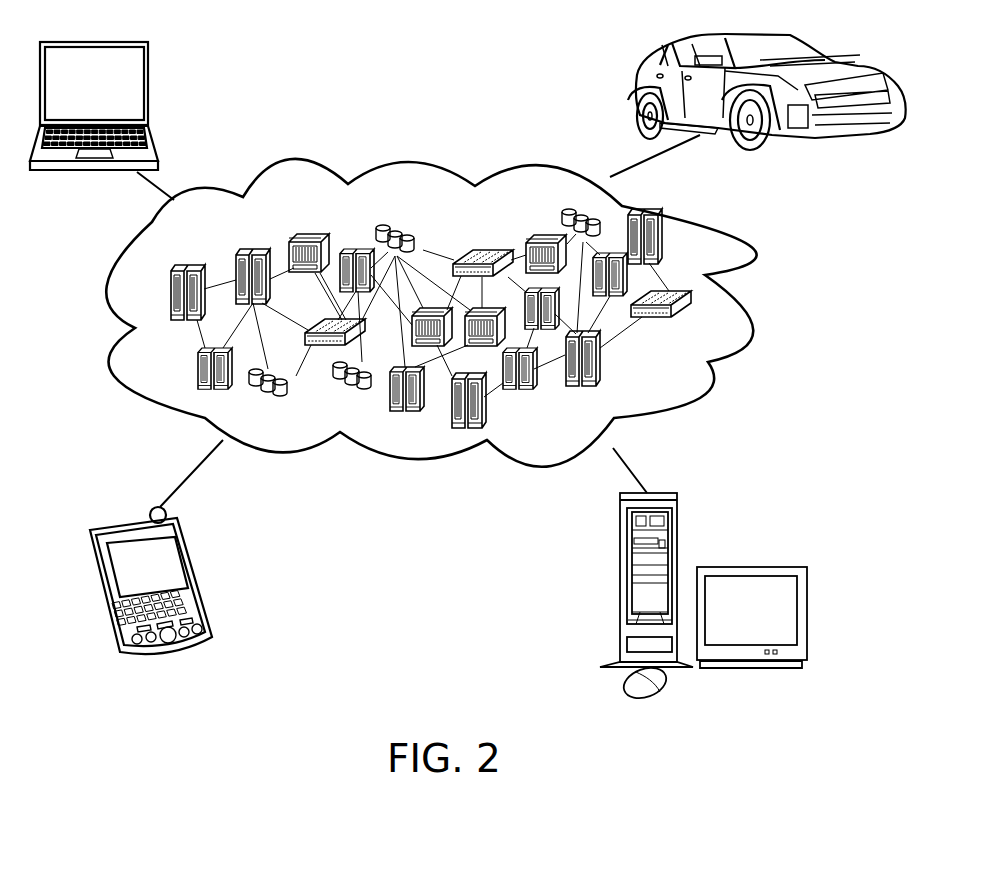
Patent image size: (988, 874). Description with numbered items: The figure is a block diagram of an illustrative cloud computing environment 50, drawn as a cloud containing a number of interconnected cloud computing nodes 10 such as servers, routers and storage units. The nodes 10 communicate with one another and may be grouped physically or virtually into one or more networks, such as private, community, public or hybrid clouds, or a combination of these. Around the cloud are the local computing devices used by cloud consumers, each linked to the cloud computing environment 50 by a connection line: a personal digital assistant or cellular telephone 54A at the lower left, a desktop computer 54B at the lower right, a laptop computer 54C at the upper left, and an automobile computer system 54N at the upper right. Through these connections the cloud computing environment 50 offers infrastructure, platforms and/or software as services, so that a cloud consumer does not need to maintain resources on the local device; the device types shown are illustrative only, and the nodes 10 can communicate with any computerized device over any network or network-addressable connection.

The cloud computing node 10 is at (677, 381).
The cloud computing environment 50 is at (748, 302).
The personal digital assistant or cellular telephone 54A is at (192, 556).
The desktop computer 54B is at (620, 540).
The laptop computer 54C is at (150, 84).
The automobile computer system 54N is at (630, 90).